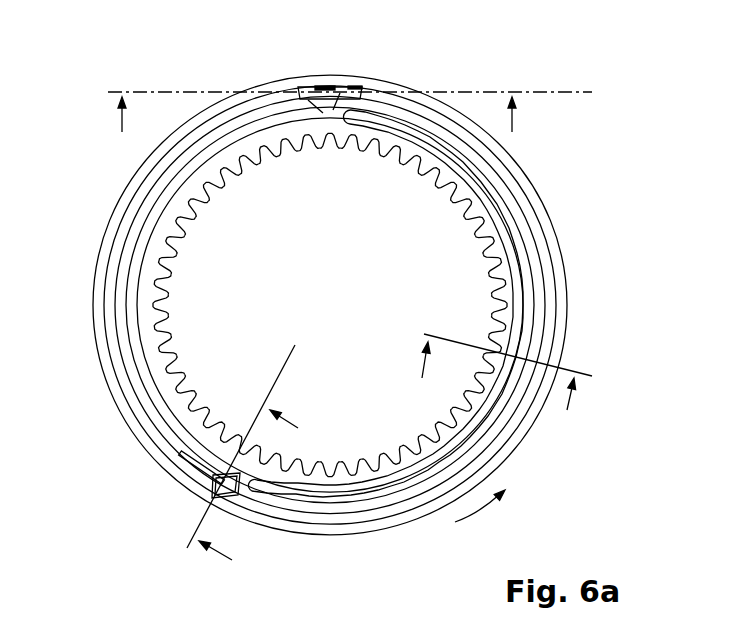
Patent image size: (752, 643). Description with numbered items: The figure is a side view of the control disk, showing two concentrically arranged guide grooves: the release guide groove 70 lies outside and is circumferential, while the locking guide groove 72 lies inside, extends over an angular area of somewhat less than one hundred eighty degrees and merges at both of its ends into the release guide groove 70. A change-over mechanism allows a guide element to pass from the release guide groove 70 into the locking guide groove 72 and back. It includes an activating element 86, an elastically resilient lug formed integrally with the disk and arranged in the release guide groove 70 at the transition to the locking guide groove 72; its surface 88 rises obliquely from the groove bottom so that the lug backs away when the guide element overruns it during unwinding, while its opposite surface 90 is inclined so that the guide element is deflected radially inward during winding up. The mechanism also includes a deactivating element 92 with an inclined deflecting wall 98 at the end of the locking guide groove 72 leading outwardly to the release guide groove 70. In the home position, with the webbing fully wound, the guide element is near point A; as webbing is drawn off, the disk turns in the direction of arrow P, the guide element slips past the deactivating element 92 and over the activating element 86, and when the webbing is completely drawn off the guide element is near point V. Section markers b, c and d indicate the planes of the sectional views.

The release guide groove 70 is at (106, 289).
The locking guide groove 72 is at (143, 263).
The activating element 86 is at (328, 116).
The surface 88 is at (309, 94).
The opposite surface 90 is at (336, 88).
The deactivating element 92 is at (212, 447).
The deflecting wall 98 is at (224, 496).
The point A is at (317, 521).
The point V is at (401, 100).
The arrow P is at (480, 516).
The section b- b is at (325, 119).
The section c- c is at (243, 468).
The section d- d is at (507, 376).